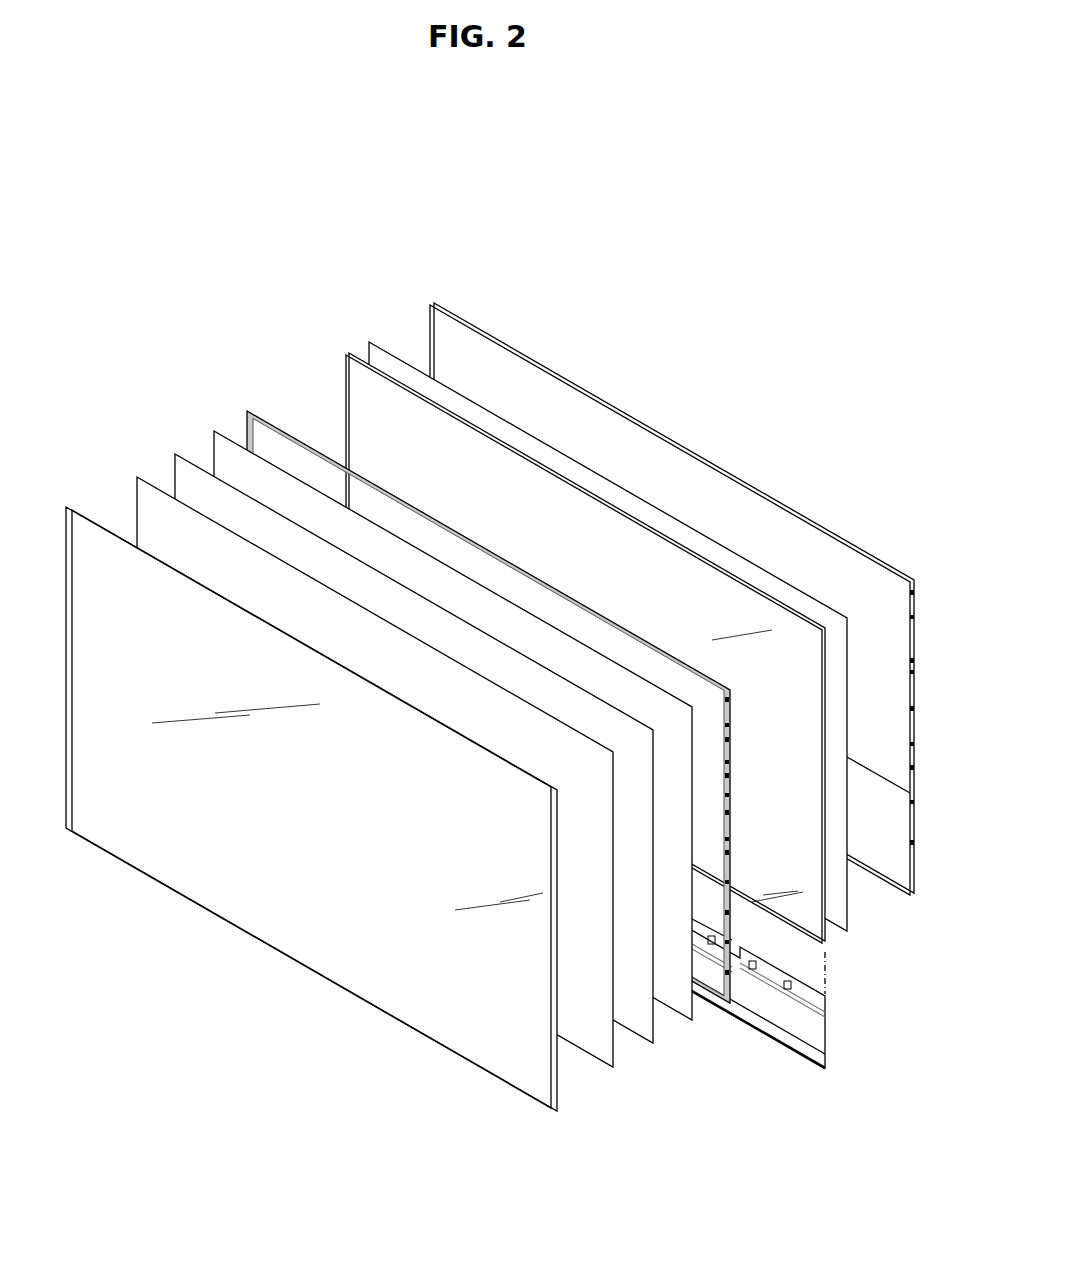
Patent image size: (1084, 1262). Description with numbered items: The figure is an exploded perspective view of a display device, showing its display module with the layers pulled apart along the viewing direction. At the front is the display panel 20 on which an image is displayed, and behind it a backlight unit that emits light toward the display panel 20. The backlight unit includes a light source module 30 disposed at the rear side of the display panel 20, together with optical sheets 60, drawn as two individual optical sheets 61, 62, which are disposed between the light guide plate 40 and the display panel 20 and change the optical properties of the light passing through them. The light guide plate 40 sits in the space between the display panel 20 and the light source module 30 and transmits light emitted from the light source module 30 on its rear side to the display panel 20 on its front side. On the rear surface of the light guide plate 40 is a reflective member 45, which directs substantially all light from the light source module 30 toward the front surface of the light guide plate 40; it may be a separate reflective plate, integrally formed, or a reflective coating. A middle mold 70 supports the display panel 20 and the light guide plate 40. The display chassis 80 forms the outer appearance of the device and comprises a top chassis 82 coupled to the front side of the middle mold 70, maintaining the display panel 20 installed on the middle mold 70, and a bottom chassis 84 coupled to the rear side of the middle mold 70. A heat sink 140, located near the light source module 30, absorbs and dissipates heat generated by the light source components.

The display panel 20 is at (597, 1045).
The light source module 30 is at (813, 1093).
The light guide plate 40 is at (800, 632).
The reflective member 45 is at (842, 903).
The optical sheets 60 is at (720, 1085).
The optical sheet 61 is at (680, 1007).
The optical sheet 62 is at (643, 1032).
The middle mold 70 is at (729, 1001).
The display chassis 80 is at (232, 293).
The top chassis 82 is at (95, 507).
The bottom chassis 84 is at (414, 312).
The heat sink 140 is at (822, 1002).